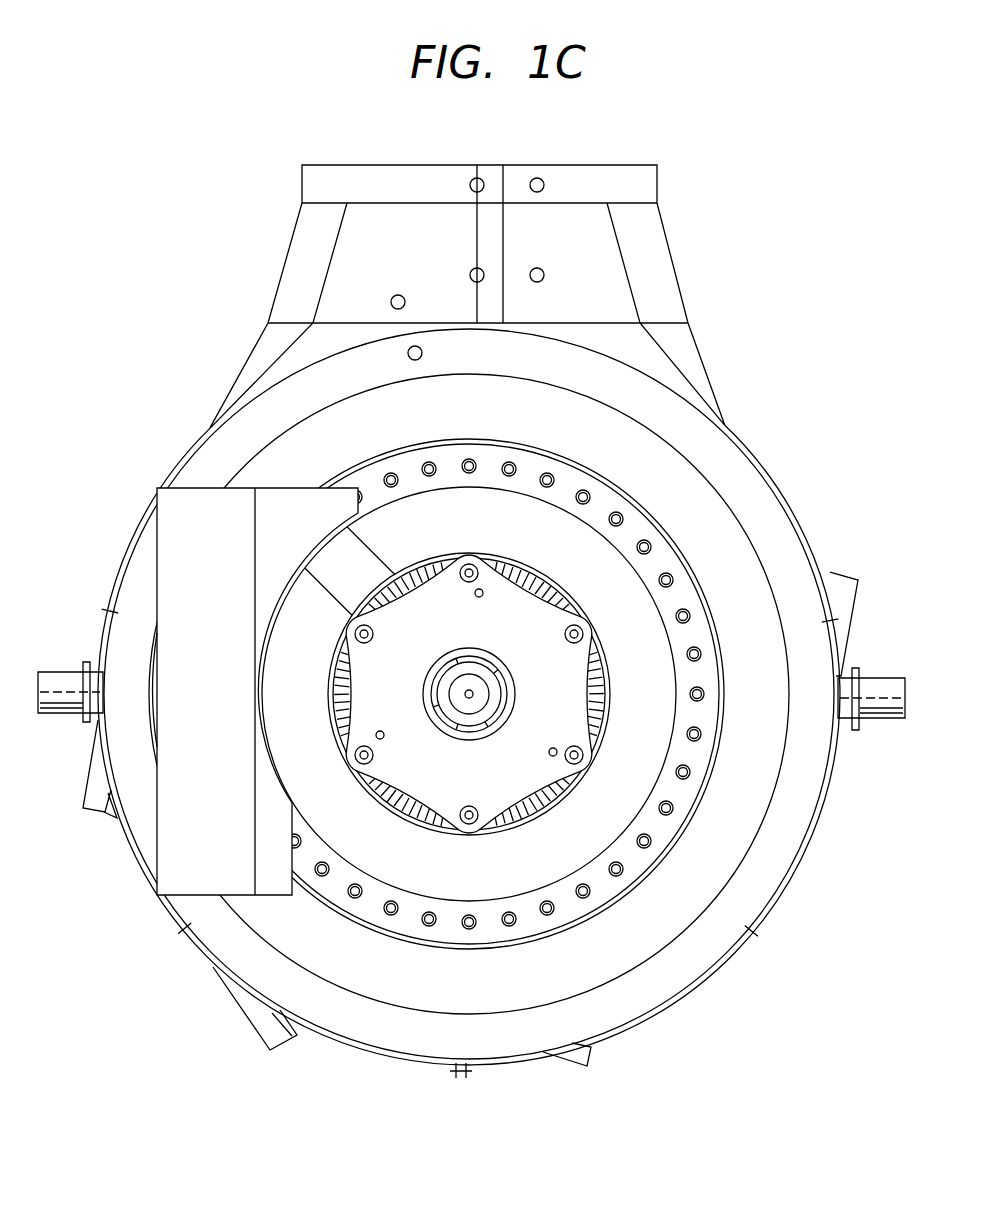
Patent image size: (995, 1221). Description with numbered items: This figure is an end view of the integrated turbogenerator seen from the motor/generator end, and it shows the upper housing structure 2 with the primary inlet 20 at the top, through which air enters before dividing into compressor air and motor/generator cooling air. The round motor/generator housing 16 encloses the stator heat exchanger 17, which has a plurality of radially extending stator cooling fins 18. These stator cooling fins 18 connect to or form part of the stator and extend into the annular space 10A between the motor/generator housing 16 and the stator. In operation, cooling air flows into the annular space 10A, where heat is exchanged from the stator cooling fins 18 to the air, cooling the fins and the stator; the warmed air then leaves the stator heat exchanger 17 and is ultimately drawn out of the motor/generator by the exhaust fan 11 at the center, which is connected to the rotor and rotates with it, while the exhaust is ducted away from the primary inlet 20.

The motor housing / upper housing structure 2 is at (627, 155).
The primary inlet 20 is at (469, 526).
The motor/generator housing 16 is at (557, 817).
The stator cooling fins 18 is at (542, 588).
The annular space 10A is at (598, 700).
The stator heat exchanger 17 is at (596, 657).
The exhaust fan 11 is at (447, 720).